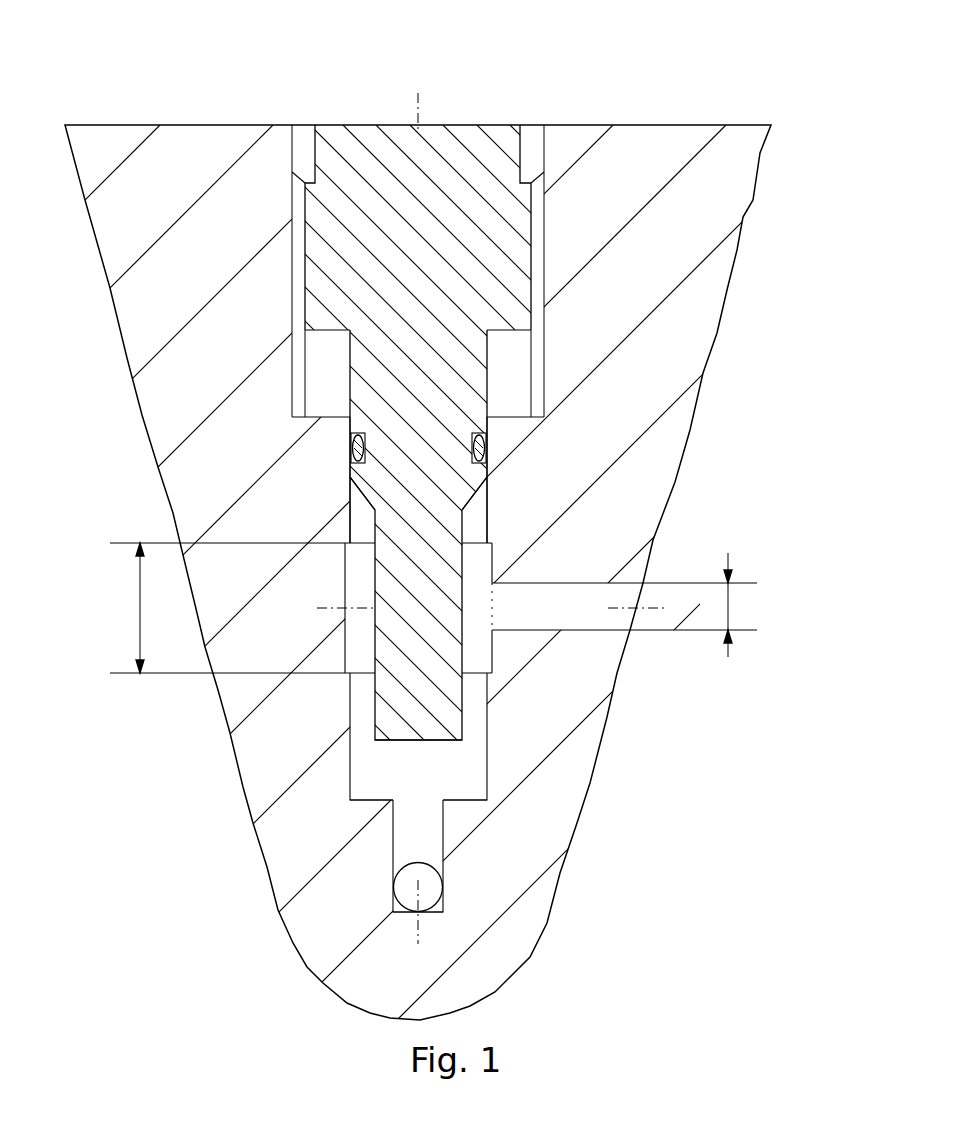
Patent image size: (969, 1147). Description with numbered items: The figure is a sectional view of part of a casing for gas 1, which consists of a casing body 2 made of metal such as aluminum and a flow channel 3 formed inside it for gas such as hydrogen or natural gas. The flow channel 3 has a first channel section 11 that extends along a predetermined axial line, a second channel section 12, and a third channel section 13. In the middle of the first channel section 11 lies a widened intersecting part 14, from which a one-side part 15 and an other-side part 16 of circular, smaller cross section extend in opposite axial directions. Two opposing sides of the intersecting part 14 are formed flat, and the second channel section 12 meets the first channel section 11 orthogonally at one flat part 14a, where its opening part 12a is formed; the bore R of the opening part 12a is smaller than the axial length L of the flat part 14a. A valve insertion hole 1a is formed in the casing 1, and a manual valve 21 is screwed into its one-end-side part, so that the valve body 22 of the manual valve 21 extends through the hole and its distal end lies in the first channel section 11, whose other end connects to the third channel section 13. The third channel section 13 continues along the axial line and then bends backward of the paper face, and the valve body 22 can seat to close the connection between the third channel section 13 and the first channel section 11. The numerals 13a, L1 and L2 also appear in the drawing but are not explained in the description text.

The casing for gas 1 is at (722, 100).
The valve insertion hole 1a is at (538, 172).
The casing body 2 is at (200, 128).
The flow channel 3 is at (394, 808).
The first channel section 11 is at (352, 778).
The second channel section 12 is at (552, 588).
The opening part 12a is at (492, 615).
The third channel section 13 is at (445, 843).
The step portion 13a is at (378, 802).
The intersecting part 14 is at (347, 648).
The flat part 14a is at (485, 560).
The one-side part 15 is at (485, 742).
The other-side part 16 is at (352, 512).
The manual valve 21 is at (372, 137).
The valve body 22 is at (360, 398).
The length of the flat part L is at (138, 607).
The ball position length L1 is at (420, 928).
The passage center length L2 is at (653, 608).
The bore of the opening part R is at (733, 607).